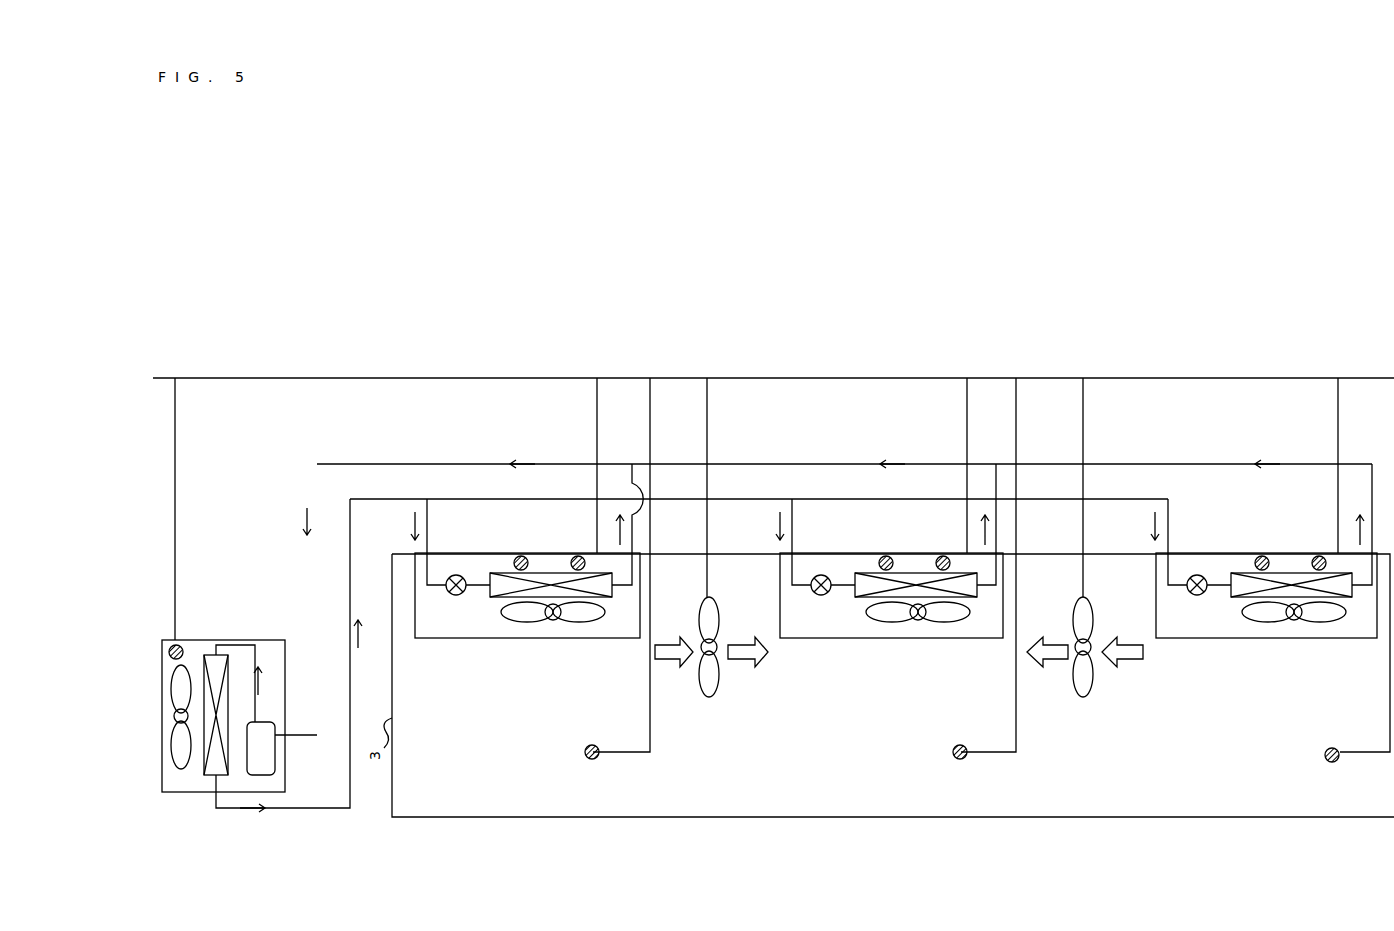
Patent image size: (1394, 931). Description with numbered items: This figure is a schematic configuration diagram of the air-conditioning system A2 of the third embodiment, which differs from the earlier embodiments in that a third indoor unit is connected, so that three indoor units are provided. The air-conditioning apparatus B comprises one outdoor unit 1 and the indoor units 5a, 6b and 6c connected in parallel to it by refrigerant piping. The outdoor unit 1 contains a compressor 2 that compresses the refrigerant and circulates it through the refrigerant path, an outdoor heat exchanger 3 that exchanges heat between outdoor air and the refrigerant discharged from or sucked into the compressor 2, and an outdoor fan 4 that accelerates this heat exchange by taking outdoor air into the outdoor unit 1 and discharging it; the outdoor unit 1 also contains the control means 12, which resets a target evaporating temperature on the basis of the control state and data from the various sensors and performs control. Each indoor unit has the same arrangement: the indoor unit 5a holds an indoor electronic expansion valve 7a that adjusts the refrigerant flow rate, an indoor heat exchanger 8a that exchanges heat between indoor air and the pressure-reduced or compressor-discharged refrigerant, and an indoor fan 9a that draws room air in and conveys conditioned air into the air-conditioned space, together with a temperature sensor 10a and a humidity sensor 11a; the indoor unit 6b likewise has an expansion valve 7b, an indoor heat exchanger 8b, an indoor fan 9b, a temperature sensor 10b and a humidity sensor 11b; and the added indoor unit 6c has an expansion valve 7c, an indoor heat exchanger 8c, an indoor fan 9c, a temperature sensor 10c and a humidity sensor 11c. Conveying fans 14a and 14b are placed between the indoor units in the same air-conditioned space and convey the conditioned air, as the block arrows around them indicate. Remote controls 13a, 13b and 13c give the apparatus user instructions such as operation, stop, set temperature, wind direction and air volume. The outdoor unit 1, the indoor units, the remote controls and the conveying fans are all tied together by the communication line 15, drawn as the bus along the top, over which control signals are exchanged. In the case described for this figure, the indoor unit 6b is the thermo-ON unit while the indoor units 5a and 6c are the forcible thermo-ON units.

The outdoor unit 1 is at (245, 655).
The compressor 2 is at (272, 760).
The outdoor heat exchanger 3 is at (214, 650).
The outdoor fan 4 is at (170, 740).
The indoor unit a 5a is at (529, 566).
The indoor unit 6b is at (891, 566).
The indoor unit 6c is at (1266, 566).
The indoor electronic expansion valve 7a is at (446, 607).
The indoor electronic expansion valve 7b is at (811, 607).
The expansion valve 7c is at (1187, 607).
The indoor heat exchanger 8a is at (538, 606).
The indoor heat exchanger 8b is at (903, 606).
The indoor heat exchanger 8c is at (1279, 606).
The indoor fan 9a is at (553, 635).
The indoor fan 9b is at (918, 635).
The indoor fan 9c is at (1294, 635).
The temperature sensor 10a is at (517, 545).
The temperature sensor 10b is at (882, 545).
The temperature sensor 10c is at (1258, 545).
The humidity sensor 11a is at (574, 545).
The humidity sensor 11b is at (939, 545).
The humidity sensor 11c is at (1315, 545).
The control means 12 is at (170, 655).
The remote control 13a is at (590, 746).
The remote control 13b is at (958, 746).
The room temperature sensor 13c is at (1330, 749).
The ventilation fan 14a is at (702, 697).
The ventilation fan 14b is at (1076, 697).
The communication line 15 is at (293, 380).
The air-conditioning system A2 is at (552, 367).
The air-conditioning apparatus B is at (1142, 455).